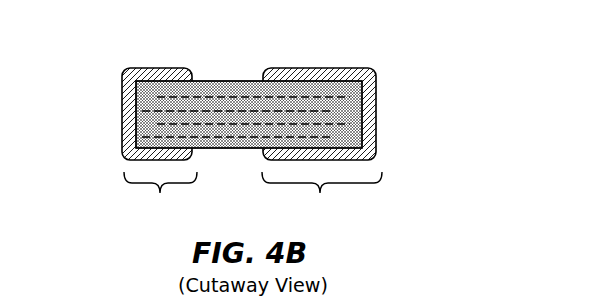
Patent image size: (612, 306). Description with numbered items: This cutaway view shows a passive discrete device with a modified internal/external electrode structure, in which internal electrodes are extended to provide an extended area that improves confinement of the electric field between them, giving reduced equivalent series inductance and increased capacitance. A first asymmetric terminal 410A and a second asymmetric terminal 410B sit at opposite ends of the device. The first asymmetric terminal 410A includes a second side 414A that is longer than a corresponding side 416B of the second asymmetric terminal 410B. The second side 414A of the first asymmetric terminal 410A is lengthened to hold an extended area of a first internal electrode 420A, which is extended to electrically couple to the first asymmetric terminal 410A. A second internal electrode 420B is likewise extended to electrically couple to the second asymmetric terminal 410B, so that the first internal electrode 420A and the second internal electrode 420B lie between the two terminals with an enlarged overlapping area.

The first asymmetric terminal 410A is at (376, 113).
The second asymmetric terminal 410B is at (122, 120).
The first internal electrode 420A is at (257, 97).
The second internal electrode 420B is at (238, 138).
The second side 414A is at (322, 199).
The corresponding side 416B is at (160, 199).